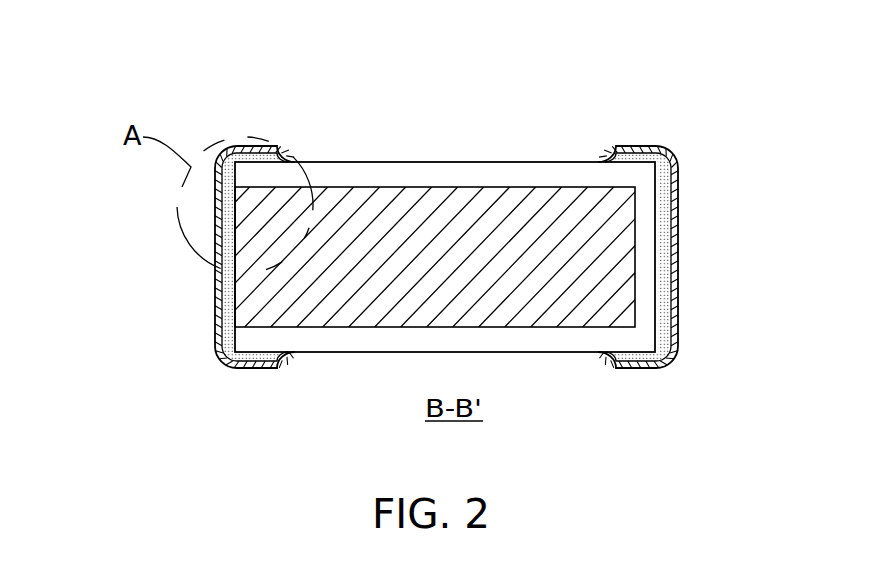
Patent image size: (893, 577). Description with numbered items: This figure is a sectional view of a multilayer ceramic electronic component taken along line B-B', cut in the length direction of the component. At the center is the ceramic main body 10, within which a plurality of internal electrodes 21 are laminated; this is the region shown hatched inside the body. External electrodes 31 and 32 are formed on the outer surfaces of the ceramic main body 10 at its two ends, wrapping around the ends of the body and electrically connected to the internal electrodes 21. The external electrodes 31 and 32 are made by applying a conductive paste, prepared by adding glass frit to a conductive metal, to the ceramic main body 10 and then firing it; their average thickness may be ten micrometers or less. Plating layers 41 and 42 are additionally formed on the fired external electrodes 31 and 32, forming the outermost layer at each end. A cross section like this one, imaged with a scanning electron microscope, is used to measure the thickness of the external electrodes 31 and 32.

The ceramic main body 10 is at (345, 163).
The internal electrodes 21 is at (623, 247).
The external electrode 31 is at (223, 314).
The external electrode 32 is at (668, 312).
The plating layer 41 is at (220, 356).
The plating layer 42 is at (658, 362).